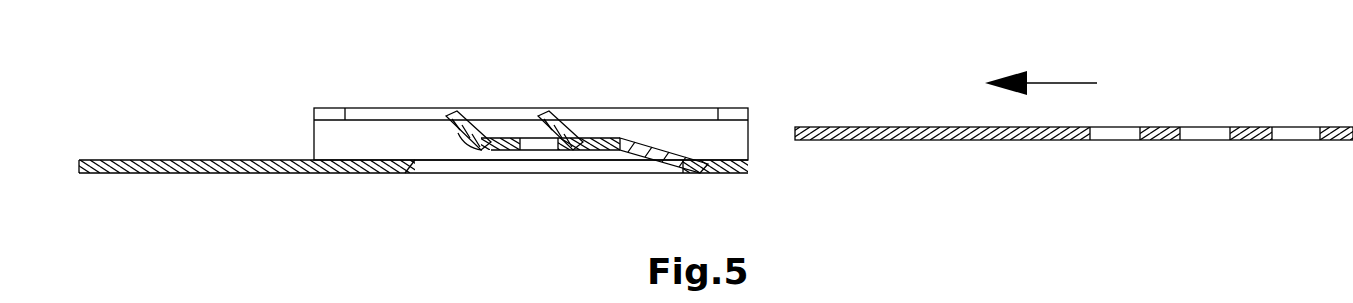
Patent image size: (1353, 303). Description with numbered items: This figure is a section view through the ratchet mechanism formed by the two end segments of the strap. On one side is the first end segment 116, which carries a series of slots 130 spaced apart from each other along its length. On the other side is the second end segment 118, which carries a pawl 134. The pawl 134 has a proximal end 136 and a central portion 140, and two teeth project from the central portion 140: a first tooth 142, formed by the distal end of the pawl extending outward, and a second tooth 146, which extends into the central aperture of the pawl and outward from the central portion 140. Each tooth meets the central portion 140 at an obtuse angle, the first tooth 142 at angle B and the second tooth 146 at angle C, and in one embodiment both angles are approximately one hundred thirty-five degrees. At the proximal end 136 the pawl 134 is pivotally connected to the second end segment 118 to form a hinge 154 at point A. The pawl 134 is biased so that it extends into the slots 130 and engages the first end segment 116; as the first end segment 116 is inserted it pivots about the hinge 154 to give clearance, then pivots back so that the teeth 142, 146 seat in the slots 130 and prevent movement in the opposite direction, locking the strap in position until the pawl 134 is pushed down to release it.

The first end segment 116 is at (1293, 96).
The second end segment 118 is at (127, 133).
The slots 130 is at (1292, 140).
The pawl 134 is at (401, 142).
The proximal end 136 is at (712, 173).
The central portion 140 is at (505, 150).
The first tooth 142 is at (462, 135).
The second tooth 146 is at (560, 150).
The hinge 154 is at (665, 168).
The point A is at (675, 166).
The angle B is at (527, 118).
The angle C is at (705, 148).